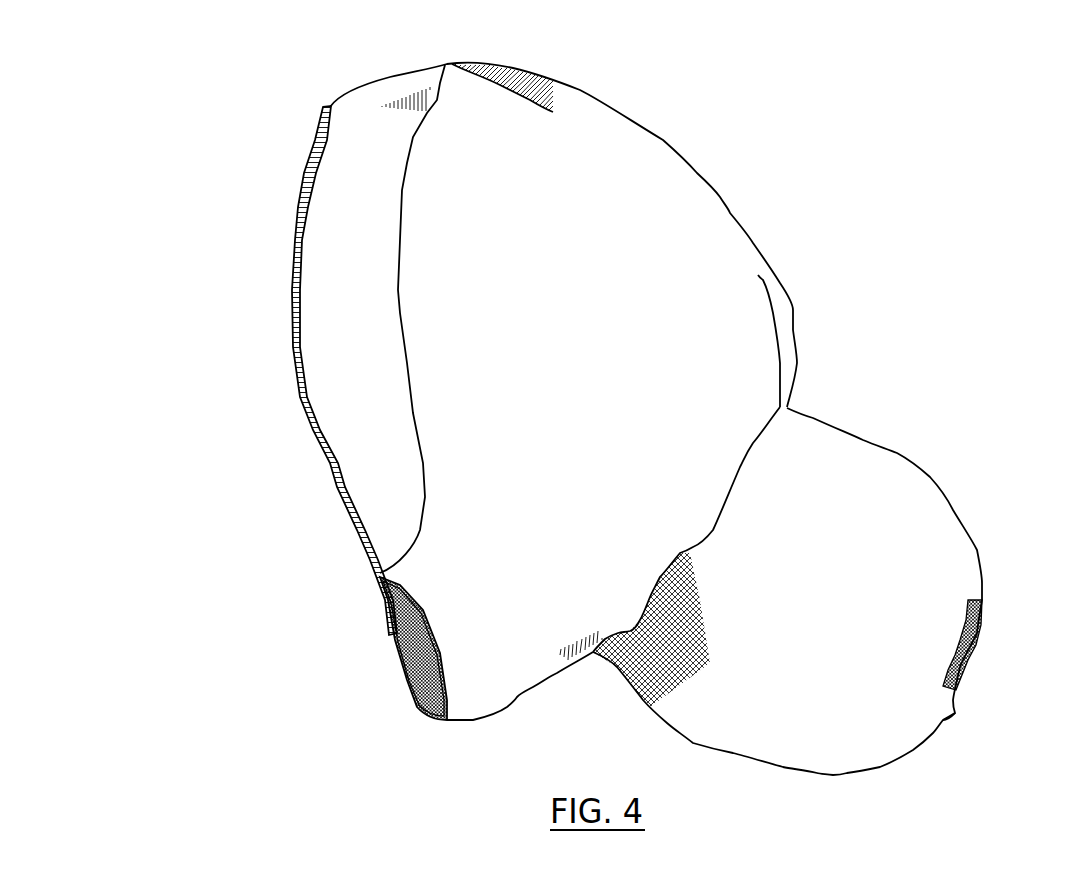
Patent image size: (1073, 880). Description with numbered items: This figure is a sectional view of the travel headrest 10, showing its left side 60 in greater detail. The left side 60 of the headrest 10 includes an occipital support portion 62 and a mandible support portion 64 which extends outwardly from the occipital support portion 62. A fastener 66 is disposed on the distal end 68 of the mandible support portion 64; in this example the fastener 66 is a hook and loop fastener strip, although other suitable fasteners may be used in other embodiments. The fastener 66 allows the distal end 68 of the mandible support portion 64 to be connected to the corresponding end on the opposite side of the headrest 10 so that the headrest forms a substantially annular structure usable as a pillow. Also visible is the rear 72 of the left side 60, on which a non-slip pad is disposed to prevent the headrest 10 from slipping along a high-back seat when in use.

The headrest 10 is at (252, 95).
The left side 60 is at (783, 287).
The occipital support portion 62 is at (597, 140).
The mandible support portion 64 is at (927, 523).
The fastener 66 is at (980, 633).
The distal end 68 is at (955, 717).
The rear 72 is at (290, 317).